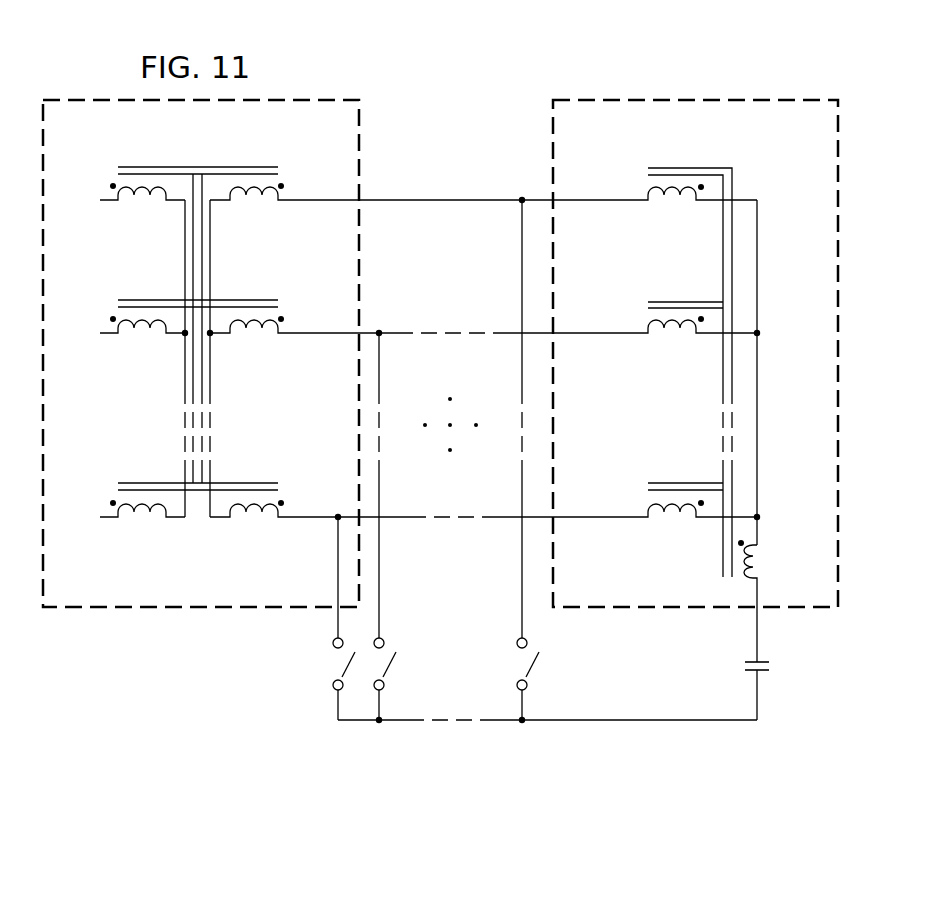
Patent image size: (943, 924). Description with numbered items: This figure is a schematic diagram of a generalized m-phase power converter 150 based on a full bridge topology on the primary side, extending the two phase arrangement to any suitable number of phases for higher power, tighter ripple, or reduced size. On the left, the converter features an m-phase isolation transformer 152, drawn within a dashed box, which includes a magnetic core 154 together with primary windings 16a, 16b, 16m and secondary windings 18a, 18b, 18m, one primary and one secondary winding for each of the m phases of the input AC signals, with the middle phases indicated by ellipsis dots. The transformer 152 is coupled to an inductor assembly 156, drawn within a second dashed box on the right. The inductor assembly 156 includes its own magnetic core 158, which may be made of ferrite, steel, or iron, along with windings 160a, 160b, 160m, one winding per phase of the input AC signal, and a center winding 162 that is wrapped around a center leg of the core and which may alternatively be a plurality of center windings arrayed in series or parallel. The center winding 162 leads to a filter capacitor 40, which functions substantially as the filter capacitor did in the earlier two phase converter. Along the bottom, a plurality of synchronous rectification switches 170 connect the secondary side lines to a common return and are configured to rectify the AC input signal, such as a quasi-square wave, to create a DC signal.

The m-phase power converter 150 is at (413, 63).
The m-phase isolation transformer 152 is at (187, 607).
The magnetic core 154 is at (175, 165).
The inductor assembly 156 is at (708, 99).
The magnetic core 158 is at (690, 165).
The primary winding 16a is at (116, 196).
The primary winding 16b is at (142, 334).
The primary winding 16m is at (143, 519).
The secondary winding 18a is at (286, 192).
The secondary winding 18b is at (286, 325).
The secondary winding 18m is at (253, 519).
The winding 160a is at (647, 196).
The winding 160b is at (647, 328).
The winding 160m is at (675, 513).
The center winding 162 is at (752, 569).
The filter capacitor 40 is at (771, 666).
The synchronous rectification switches 170 is at (450, 731).